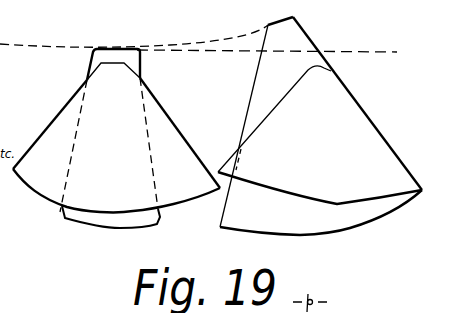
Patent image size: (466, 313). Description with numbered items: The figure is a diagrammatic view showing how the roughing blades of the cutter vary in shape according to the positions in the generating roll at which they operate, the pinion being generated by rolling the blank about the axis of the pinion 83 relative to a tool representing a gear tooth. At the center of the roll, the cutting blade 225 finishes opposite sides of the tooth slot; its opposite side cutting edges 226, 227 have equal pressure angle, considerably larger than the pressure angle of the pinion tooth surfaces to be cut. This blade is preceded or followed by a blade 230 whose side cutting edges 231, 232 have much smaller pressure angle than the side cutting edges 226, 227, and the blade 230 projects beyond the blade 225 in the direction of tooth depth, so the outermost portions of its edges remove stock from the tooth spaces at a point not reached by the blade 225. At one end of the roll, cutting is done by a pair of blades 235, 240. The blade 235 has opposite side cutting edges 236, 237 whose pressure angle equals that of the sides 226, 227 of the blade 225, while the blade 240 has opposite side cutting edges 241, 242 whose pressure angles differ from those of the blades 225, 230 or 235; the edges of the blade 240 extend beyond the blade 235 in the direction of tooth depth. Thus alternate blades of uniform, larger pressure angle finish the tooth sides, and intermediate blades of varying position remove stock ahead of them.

The axis of the pinion 83 is at (313, 300).
The cutting blade 225 is at (176, 190).
The side cutting edge 226 is at (52, 120).
The side cutting edge 227 is at (182, 137).
The blade 230 is at (114, 222).
The side cutting edge 231 is at (93, 62).
The side cutting edge 232 is at (140, 75).
The blade 235 is at (322, 193).
The side cutting edge 236 is at (273, 110).
The side cutting edge 237 is at (362, 110).
The blade 240 is at (362, 220).
The side cutting edge 241 is at (259, 68).
The side cutting edge 242 is at (312, 41).